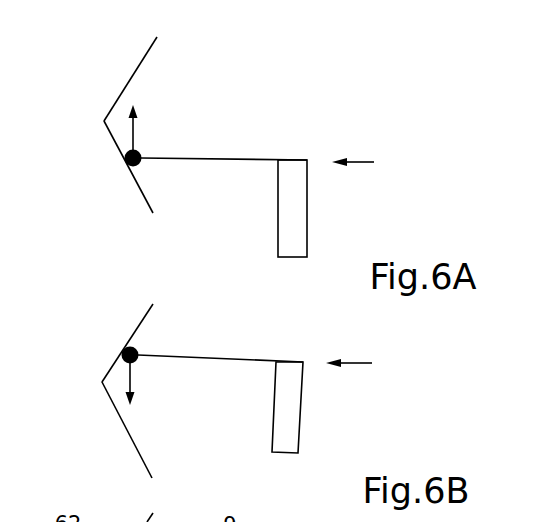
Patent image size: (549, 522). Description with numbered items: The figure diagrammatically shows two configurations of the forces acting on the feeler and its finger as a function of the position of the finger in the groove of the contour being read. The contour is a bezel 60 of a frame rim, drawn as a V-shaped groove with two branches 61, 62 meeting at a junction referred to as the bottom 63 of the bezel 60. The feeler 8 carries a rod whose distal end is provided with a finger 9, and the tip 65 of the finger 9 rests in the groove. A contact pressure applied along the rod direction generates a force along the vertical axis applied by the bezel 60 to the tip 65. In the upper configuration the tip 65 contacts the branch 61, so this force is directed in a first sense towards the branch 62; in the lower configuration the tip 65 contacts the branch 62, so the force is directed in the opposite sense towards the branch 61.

In FIG. 6A, the feeler 8 is at (307, 224).
In FIG. 6B, the feeler 8 is at (298, 417).
In FIG. 6A, the finger 9 is at (232, 160).
In FIG. 6B, the finger 9 is at (233, 358).
In FIG. 6A, the bezel 60 is at (147, 100).
In FIG. 6B, the bezel 60 is at (144, 416).
In FIG. 6A, the branch 61 is at (131, 182).
In FIG. 6B, the branch 61 is at (125, 433).
In FIG. 6A, the branch 62 is at (135, 72).
In FIG. 6B, the branch 62 is at (140, 322).
In FIG. 6A, the bottom 63 is at (104, 121).
In FIG. 6B, the bottom 63 is at (102, 382).
In FIG. 6A, the tip 65 is at (141, 150).
In FIG. 6B, the tip 65 is at (138, 346).